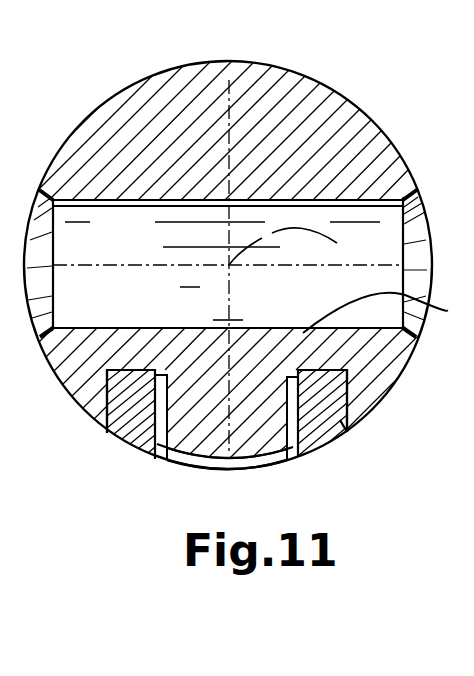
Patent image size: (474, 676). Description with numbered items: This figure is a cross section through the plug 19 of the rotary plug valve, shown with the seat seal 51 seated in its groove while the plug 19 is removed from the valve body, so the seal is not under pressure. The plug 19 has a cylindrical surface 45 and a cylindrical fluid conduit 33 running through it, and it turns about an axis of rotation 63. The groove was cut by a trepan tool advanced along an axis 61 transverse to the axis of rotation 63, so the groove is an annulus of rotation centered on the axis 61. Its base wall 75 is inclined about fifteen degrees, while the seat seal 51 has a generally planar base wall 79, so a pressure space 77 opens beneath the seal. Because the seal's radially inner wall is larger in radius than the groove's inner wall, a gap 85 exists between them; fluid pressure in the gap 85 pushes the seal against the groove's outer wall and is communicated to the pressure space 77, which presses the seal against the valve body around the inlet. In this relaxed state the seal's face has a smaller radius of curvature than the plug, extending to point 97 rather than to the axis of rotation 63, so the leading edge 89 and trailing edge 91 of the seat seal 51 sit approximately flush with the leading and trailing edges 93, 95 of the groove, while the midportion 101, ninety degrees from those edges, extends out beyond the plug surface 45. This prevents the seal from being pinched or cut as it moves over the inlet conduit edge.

The plug 19 is at (175, 110).
The cylindrical surface 45 is at (317, 81).
The fluid conduit 33 is at (148, 250).
The axis of rotation 63 is at (297, 246).
The point 97 is at (231, 322).
The axis 61 is at (388, 313).
The base wall 79 is at (120, 368).
The base wall 75 is at (128, 368).
The pressure space 77 is at (338, 368).
The leading edge 89 is at (108, 433).
The leading edge 93 is at (107, 430).
The seat seal 51 is at (320, 428).
The trailing edge 95 is at (347, 430).
The trailing edge 91 is at (347, 432).
The gap 85 is at (294, 448).
The midportion 101 is at (213, 468).